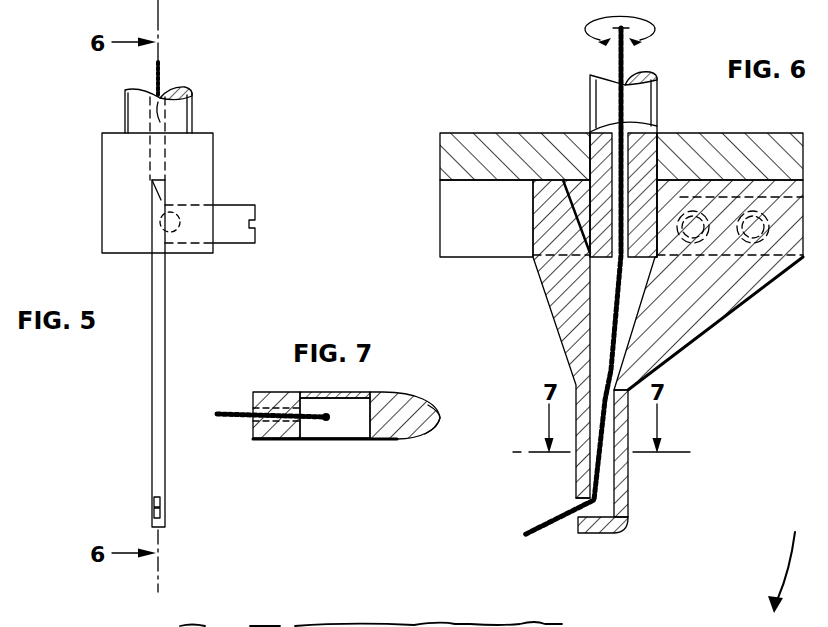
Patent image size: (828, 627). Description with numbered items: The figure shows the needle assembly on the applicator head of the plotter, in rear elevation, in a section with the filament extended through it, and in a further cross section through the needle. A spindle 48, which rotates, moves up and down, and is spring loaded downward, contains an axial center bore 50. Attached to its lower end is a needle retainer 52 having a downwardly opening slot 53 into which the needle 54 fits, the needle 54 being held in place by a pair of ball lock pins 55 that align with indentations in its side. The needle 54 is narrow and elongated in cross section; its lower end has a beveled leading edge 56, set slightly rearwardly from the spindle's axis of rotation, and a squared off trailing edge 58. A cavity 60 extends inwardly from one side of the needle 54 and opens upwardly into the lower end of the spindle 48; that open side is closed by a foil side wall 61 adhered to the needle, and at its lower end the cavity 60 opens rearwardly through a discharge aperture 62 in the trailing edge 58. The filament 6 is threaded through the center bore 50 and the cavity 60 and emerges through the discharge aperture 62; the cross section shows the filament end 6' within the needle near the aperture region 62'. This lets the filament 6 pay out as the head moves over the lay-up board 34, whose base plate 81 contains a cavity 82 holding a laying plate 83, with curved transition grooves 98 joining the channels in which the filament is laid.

In FIG. 5, the filament 6 is at (187, 59).
In FIG. 6, the filament 6 is at (566, 277).
In FIG. 7, the drill bit end 6' is at (261, 436).
In FIG. 5, the spindle 48 is at (187, 118).
In FIG. 6, the spindle 48 is at (590, 96).
In FIG. 5, the center bore 50 is at (183, 88).
In FIG. 6, the center bore 50 is at (628, 142).
In FIG. 5, the needle retainer 52 is at (200, 152).
In FIG. 6, the needle retainer 52 is at (445, 152).
In FIG. 5, the slot 53 is at (152, 200).
In FIG. 6, the slot 53 is at (486, 232).
In FIG. 5, the needle 54 is at (152, 393).
In FIG. 7, the needle 54 is at (394, 432).
In FIG. 6, the needle 54 is at (624, 471).
In FIG. 5, the ball lock pins 55 is at (185, 233).
In FIG. 6, the ball lock pins 55 is at (757, 255).
In FIG. 7, the beveled leading edge 56 is at (440, 421).
In FIG. 6, the beveled leading edge 56 is at (630, 507).
In FIG. 7, the squared off trailing edge 58 is at (253, 398).
In FIG. 6, the squared off trailing edge 58 is at (576, 476).
In FIG. 7, the cavity 60 is at (348, 423).
In FIG. 6, the cavity 60 is at (623, 323).
In FIG. 7, the foil side wall 61 is at (295, 441).
In FIG. 5, the discharge aperture 62 is at (186, 510).
In FIG. 6, the discharge aperture 62 is at (566, 531).
In FIG. 7, the bore opening 62' is at (236, 450).
In FIG. 6, the lay-up board 34 is at (790, 560).
In FIG. 6, the curved transition groove 98 is at (457, 625).
In FIG. 6, the cavity 82 is at (564, 626).
In FIG. 6, the laying plate 83 is at (632, 625).
In FIG. 6, the base plate 81 is at (706, 626).